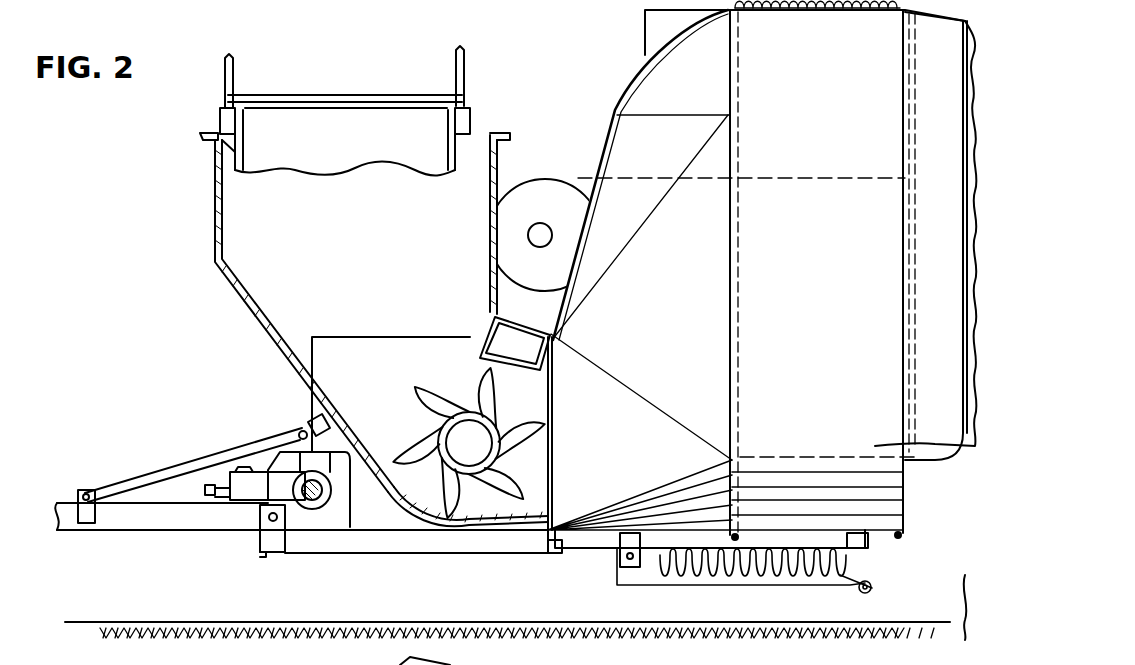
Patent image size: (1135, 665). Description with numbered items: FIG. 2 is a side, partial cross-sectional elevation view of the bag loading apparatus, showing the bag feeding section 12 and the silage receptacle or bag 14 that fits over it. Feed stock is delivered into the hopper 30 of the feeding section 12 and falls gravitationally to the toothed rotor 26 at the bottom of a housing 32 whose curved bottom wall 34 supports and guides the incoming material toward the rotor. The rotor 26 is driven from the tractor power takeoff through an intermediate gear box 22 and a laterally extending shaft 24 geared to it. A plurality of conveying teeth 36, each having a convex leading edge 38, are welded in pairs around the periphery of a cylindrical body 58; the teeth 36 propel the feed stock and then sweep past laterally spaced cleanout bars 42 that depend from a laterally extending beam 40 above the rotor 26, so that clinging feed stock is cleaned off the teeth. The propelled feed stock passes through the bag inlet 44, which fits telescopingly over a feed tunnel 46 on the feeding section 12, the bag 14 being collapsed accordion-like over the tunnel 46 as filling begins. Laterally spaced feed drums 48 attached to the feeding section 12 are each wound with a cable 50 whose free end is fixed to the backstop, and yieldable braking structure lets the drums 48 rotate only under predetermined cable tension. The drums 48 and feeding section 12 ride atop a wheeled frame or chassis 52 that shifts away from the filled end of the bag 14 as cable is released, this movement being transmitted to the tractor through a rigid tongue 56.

The bag feeding section 12 is at (534, 65).
The silage receptacle or bag 14 is at (950, 575).
The intermediate gear box 22 is at (294, 462).
The laterally extending shaft 24 is at (313, 502).
The toothed rotor 26 is at (500, 480).
The hopper 30 is at (498, 188).
The housing 32 is at (255, 326).
The curved bottom wall 34 is at (422, 525).
The conveying teeth 36 is at (513, 475).
The convex leading edge 38 is at (445, 370).
The laterally extending beam 40 is at (513, 315).
The cleanout bars 42 is at (530, 402).
The bag inlet 44 is at (660, 548).
The feed tunnel 46 is at (805, 12).
The feed drums 48 is at (538, 185).
The cable 50 is at (808, 176).
The frame or chassis 52 is at (372, 548).
The rigid tongue 56 is at (172, 523).
The cylindrical body 58 is at (400, 420).